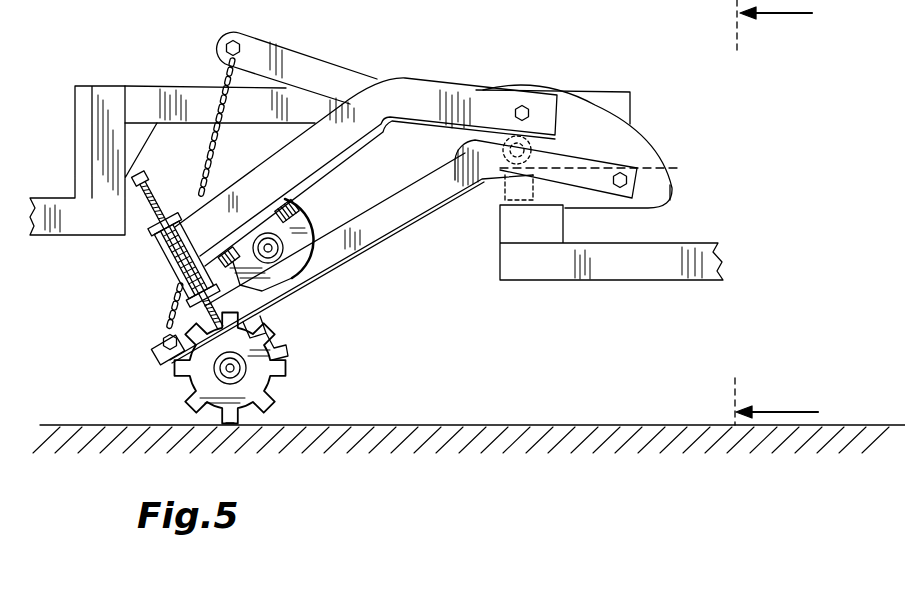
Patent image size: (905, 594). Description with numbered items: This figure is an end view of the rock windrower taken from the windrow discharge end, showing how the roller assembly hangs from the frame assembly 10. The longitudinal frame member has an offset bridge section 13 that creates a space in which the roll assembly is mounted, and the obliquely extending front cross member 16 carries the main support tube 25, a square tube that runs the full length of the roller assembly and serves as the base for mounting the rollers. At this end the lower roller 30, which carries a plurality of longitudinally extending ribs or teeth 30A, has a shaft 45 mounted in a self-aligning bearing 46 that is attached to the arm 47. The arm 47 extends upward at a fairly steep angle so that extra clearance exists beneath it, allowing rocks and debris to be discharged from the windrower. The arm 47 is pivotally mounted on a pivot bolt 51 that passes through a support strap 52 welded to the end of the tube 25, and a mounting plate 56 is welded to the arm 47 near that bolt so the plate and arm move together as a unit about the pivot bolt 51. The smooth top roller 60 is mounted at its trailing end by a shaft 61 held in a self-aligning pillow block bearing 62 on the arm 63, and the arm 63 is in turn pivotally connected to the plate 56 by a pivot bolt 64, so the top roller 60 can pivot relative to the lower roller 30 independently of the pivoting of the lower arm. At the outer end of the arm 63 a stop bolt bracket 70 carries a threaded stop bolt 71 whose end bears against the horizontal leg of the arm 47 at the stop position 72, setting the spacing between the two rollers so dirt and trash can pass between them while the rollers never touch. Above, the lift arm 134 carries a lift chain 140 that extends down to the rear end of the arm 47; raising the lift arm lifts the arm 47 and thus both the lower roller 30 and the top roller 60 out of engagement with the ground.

The frame assembly 10 is at (799, 215).
The offset bridge section 13 is at (164, 85).
The front cross member 16 is at (548, 221).
The main support tube 25 is at (485, 200).
The lower roller 30 is at (280, 385).
The ribs or teeth 30A is at (262, 412).
The shaft 45 is at (226, 370).
The bearing 46 is at (263, 342).
The arm 47 is at (390, 234).
The pivot bolt 51 is at (625, 172).
The support strap 52 is at (671, 177).
The mounting plate 56 is at (543, 88).
The top roller 60 is at (313, 222).
The shaft 61 is at (267, 233).
The self-aligning pillow block bearing 62 is at (296, 210).
The arm 63 is at (408, 87).
The pivot bolt 64 is at (522, 103).
The stop bolt bracket 70 is at (173, 262).
The stop bolt 71 is at (148, 194).
The stop position 72 is at (160, 362).
The lift arm 134 is at (293, 50).
The lift chain 140 is at (218, 143).